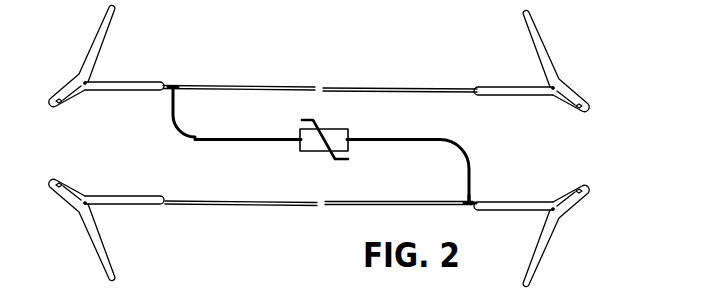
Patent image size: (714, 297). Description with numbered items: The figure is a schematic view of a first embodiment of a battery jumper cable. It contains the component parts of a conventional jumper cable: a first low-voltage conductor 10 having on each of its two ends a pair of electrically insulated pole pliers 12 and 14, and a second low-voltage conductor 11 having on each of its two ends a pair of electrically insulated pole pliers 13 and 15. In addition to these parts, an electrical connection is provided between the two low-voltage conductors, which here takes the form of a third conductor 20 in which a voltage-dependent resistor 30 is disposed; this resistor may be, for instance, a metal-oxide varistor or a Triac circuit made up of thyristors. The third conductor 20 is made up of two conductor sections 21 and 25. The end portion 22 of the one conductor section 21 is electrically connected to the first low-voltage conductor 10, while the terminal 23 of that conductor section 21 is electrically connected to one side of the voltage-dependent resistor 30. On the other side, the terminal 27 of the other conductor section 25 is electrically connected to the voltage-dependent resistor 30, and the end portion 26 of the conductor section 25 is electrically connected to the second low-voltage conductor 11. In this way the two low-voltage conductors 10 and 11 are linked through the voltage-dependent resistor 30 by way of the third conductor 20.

The first low-voltage conductor 10 is at (237, 84).
The second low-voltage conductor 11 is at (287, 207).
The pole pliers 12 is at (74, 73).
The pole pliers 13 is at (75, 216).
The pole pliers 14 is at (570, 78).
The pole pliers 15 is at (567, 222).
The third conductor 20 is at (368, 145).
The conductor section 21 is at (210, 141).
The end portion 22 is at (168, 93).
The terminal 23 is at (299, 144).
The conductor section 25 is at (422, 120).
The end portion 26 is at (474, 188).
The terminal 27 is at (353, 137).
The voltage-dependent resistor 30 is at (328, 110).